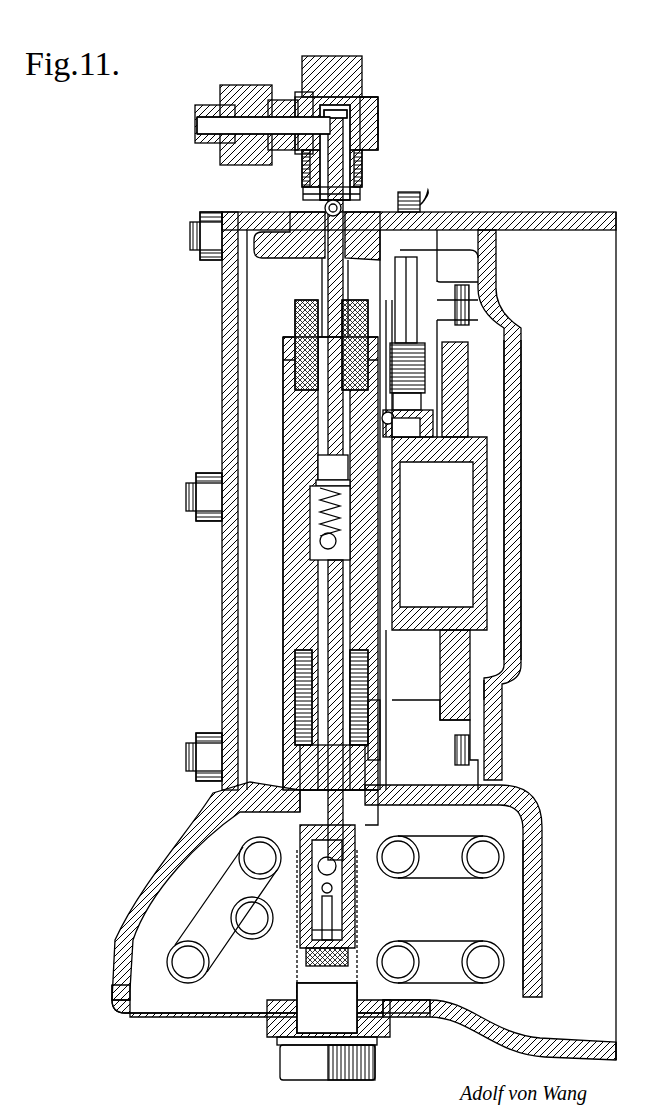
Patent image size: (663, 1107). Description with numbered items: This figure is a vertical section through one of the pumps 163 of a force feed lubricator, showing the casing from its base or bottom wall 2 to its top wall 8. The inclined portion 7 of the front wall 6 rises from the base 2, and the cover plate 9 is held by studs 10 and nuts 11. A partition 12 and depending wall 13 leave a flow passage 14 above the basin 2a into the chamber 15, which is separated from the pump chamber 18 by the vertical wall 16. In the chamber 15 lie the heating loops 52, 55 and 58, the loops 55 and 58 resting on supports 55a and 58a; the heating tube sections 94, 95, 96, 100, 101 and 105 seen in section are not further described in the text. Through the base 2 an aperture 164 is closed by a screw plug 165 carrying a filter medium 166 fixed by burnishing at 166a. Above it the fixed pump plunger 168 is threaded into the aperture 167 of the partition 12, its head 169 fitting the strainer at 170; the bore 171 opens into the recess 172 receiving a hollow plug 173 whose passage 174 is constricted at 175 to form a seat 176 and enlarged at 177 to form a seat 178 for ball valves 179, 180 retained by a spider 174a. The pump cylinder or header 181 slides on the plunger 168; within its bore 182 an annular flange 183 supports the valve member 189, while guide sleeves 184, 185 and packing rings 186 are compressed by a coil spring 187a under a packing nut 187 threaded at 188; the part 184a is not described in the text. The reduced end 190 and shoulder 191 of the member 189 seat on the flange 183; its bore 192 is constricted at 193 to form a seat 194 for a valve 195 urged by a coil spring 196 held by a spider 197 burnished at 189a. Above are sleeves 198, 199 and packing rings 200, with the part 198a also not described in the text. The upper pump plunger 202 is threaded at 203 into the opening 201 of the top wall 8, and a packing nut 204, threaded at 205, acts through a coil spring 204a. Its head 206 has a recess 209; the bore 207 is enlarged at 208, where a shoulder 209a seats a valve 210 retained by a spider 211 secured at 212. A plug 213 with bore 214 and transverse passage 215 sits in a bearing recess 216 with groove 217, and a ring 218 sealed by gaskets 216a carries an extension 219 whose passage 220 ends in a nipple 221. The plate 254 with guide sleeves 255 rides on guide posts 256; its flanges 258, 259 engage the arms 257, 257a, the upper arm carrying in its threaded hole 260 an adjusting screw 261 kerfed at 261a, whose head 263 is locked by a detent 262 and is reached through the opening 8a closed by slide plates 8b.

The base or bottom wall 2 is at (188, 1016).
The basin 2a is at (558, 1046).
The front wall 6 is at (122, 975).
The inclined portion of front wall 7 is at (175, 865).
The top wall 8 is at (518, 213).
The opening in top wall 8a is at (412, 212).
The slide plate 8b is at (428, 198).
The cover plate 9 is at (228, 612).
The stud 10 is at (190, 238).
The nut 11 is at (200, 258).
The partition 12 is at (400, 793).
The depending wall 13 is at (543, 876).
The flow passage 14 is at (540, 1022).
The chamber 15 is at (132, 906).
The vertical wall 16 is at (508, 605).
The pump chamber 18 is at (258, 665).
The heating tube 52 is at (440, 857).
The heating tube or loop 55 is at (438, 946).
The support 55a is at (430, 1018).
The heating tube or loop 58 is at (240, 876).
The support 58a is at (112, 995).
The duct 94 is at (490, 866).
The duct 95 is at (405, 856).
The duct 96 is at (280, 848).
The duct 100 is at (180, 958).
The duct 101 is at (408, 965).
The duct 105 is at (485, 975).
The pump 163 is at (290, 410).
The aperture 164 is at (285, 1028).
The screw plug 165 is at (295, 1065).
The filter medium 166 is at (292, 966).
The burnishing 166a is at (402, 1002).
The internally threaded aperture 167 is at (356, 775).
The fixed pump plunger 168 is at (370, 752).
The head 169 is at (300, 815).
The fit of head in strainer 170 is at (350, 870).
The hollow bore 171 is at (360, 728).
The internally threaded recess 172 is at (266, 888).
The hollow plug 173 is at (346, 925).
The longitudinal passage 174 is at (327, 904).
The spider 174a is at (300, 830).
The constriction 175 is at (300, 952).
The valve seat 176 is at (292, 940).
The enlargement 177 is at (370, 830).
The second valve seat 178 is at (372, 850).
The valve 179 is at (350, 890).
The valve 180 is at (346, 905).
The pump cylinder or header 181 is at (300, 540).
The longitudinal bore 182 is at (376, 600).
The internal annular flange 183 is at (368, 560).
The guide sleeve 184 is at (300, 602).
The ring 184a is at (300, 590).
The guide sleeve 185 is at (300, 650).
The packing rings 186 is at (302, 620).
The packing nut 187 is at (300, 720).
The coil spring 187a is at (300, 735).
The threaded connection 188 is at (305, 705).
The valve member 189 is at (380, 490).
The burnishing 189a is at (420, 463).
The reduced lower end 190 is at (372, 545).
The peripheral shoulder 191 is at (300, 560).
The bore 192 is at (330, 510).
The constriction 193 is at (300, 575).
The internal valve seat 194 is at (322, 542).
The valve 195 is at (370, 540).
The coil spring 196 is at (330, 488).
The spider 197 is at (326, 470).
The guide sleeve 198 is at (296, 425).
The ring 198a is at (300, 440).
The guide sleeve 199 is at (290, 340).
The packing rings 200 is at (300, 360).
The internally threaded opening 201 is at (317, 236).
The pump plunger 202 is at (346, 290).
The threaded connection 203 is at (346, 262).
The packing nut 204 is at (302, 305).
The coil spring 204a is at (295, 320).
The threaded connection 205 is at (298, 325).
The head 206 is at (362, 180).
The internal bore 207 is at (326, 270).
The enlargement 208 is at (325, 210).
The internally threaded recess 209 is at (362, 162).
The annular shoulder 209a is at (395, 236).
The valve 210 is at (355, 200).
The spider 211 is at (325, 185).
The spider securing point 212 is at (320, 200).
The plug 213 is at (364, 58).
The longitudinal bore 214 is at (348, 124).
The transverse passage 215 is at (368, 122).
The annular bearing recess 216 is at (312, 82).
The gasket 216a is at (372, 95).
The circumferential groove 217 is at (374, 115).
The ring 218 is at (378, 97).
The extension 219 is at (252, 85).
The passage 220 is at (245, 140).
The hollow nipple 221 is at (200, 125).
The plate 254 is at (470, 512).
The vertical guide sleeve 255 is at (498, 482).
The guide post 256 is at (480, 318).
The arm 257 is at (450, 360).
The arm 257a is at (430, 660).
The rib or flange 258 is at (386, 472).
The rib or flange 259 is at (416, 632).
The internally threaded hole 260 is at (410, 382).
The adjusting screw 261 is at (410, 330).
The kerf 261a is at (418, 262).
The spring pressed detent 262 is at (400, 424).
The head 263 is at (400, 412).